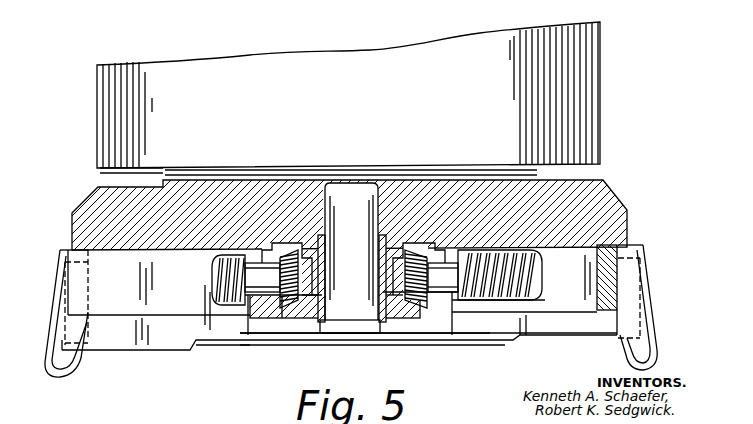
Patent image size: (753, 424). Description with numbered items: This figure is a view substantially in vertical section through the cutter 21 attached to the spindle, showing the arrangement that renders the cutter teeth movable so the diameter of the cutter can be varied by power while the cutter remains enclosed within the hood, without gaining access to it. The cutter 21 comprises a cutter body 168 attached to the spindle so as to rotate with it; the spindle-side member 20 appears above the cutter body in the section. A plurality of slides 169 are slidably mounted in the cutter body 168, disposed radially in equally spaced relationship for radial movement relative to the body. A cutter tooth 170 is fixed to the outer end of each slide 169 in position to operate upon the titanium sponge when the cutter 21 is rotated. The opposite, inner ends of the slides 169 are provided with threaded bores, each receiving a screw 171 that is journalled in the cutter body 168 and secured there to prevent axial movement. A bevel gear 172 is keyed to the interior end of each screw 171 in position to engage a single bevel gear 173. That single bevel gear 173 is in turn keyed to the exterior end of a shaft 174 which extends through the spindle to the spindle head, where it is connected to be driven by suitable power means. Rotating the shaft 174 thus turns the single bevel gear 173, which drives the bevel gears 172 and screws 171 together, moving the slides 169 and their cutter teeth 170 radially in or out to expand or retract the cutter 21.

The rotatable member 20 is at (340, 68).
The cutter 21 is at (655, 262).
The cutter body 168 is at (600, 195).
The slides 169 is at (120, 258).
The cutter tooth 170 is at (60, 364).
The screw 171 is at (217, 283).
The bevel gear 172 is at (296, 305).
The single bevel gear 173 is at (298, 316).
The shaft 174 is at (347, 197).